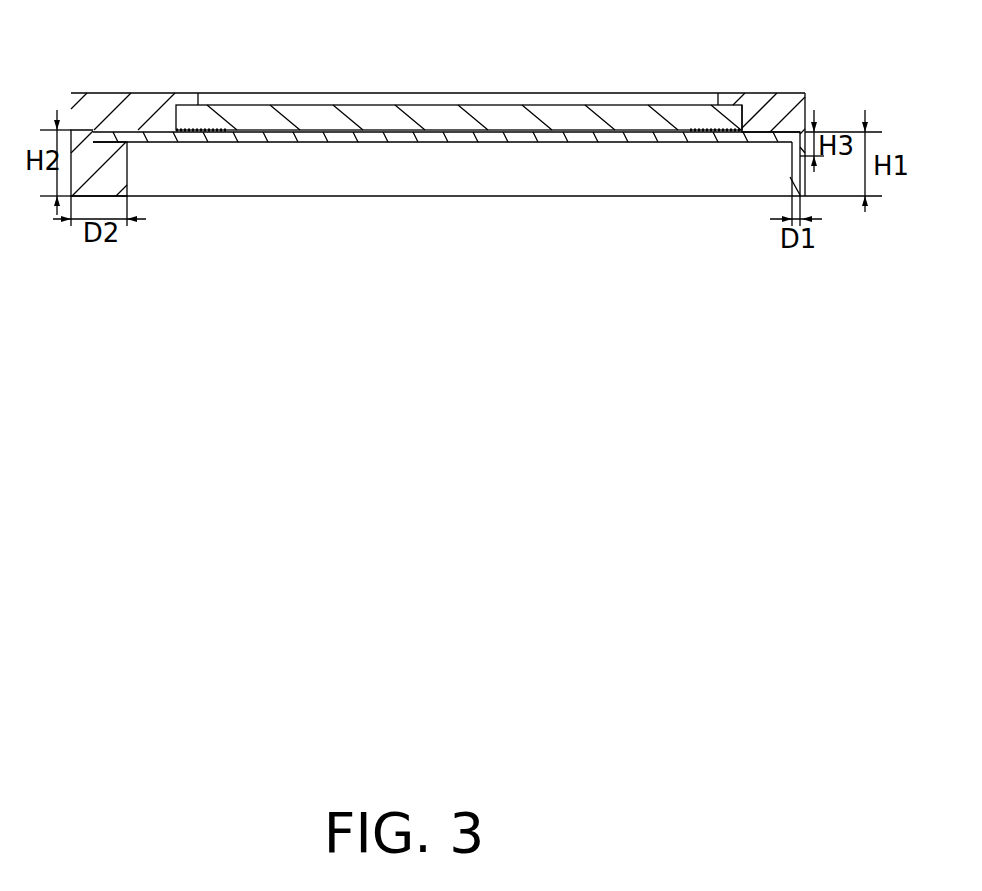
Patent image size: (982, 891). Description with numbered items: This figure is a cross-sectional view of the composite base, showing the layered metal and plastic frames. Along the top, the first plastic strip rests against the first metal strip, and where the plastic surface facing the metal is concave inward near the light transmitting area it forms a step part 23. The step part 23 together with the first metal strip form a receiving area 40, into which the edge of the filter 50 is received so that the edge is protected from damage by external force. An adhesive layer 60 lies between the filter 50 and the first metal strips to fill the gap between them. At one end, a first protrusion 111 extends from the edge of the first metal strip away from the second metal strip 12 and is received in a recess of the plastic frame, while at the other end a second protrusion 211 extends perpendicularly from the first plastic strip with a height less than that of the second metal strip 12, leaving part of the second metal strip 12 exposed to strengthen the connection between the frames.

The second metal strip 12 is at (93, 166).
The first protrusion 111 is at (103, 138).
The adhesive layer 60 is at (213, 130).
The filter 50 is at (450, 120).
The second protrusion 211 is at (803, 147).
The step part 23 is at (735, 106).
The receiving area 40 is at (722, 133).